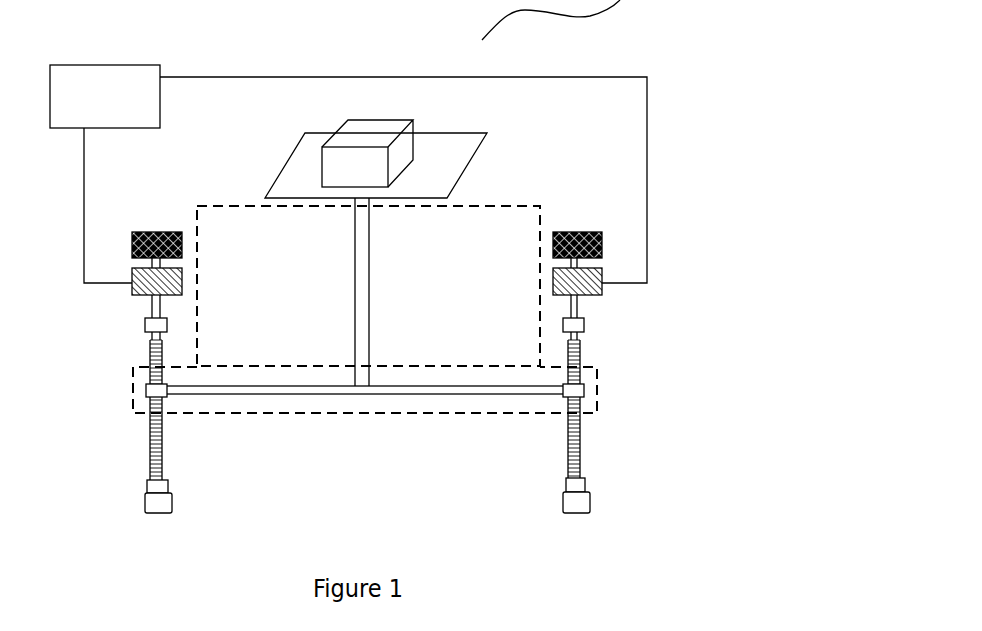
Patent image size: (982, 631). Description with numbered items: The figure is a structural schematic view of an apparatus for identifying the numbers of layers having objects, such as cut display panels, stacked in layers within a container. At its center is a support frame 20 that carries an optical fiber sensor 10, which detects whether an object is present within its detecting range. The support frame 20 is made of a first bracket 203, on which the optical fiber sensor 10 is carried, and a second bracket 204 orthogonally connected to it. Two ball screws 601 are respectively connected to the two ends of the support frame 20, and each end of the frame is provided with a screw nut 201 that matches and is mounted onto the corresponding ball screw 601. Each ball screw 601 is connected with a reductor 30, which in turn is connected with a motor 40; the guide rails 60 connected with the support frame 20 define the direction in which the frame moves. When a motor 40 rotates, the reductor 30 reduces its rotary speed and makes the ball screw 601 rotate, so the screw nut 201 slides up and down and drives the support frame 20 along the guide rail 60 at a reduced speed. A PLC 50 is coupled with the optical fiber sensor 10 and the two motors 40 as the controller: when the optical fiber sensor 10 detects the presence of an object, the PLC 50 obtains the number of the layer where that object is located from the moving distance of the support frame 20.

The optical fiber sensor 10 is at (383, 128).
The support frame 20 is at (516, 206).
The reductor 30 is at (138, 268).
The motor 40 is at (150, 232).
The PLC 50 is at (105, 96).
The guide rail 60 is at (170, 429).
The screw nut 201 is at (147, 391).
The first bracket 203 is at (366, 298).
The second bracket 204 is at (433, 387).
The ball screw 601 is at (153, 353).